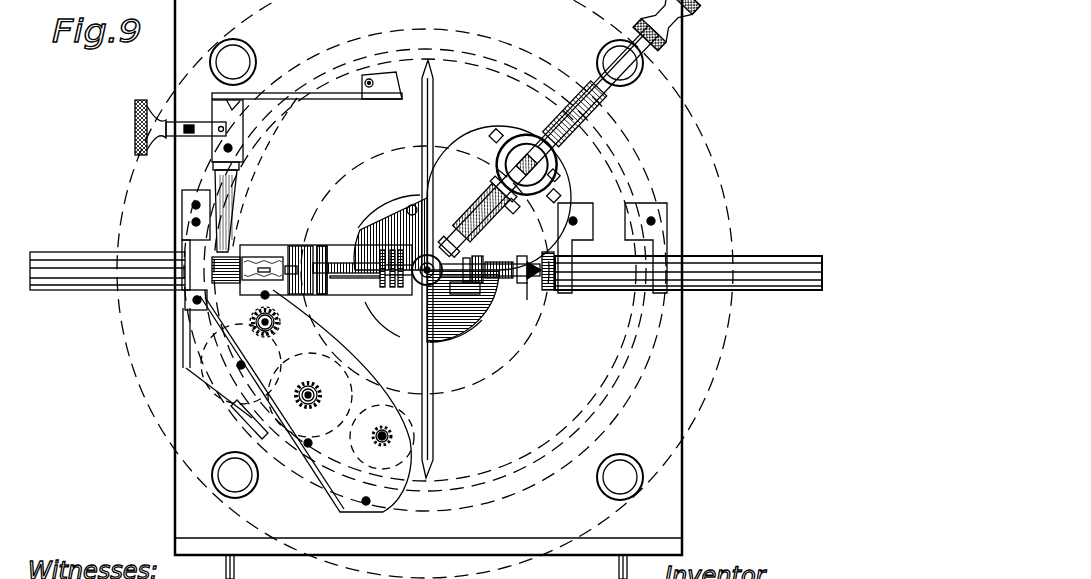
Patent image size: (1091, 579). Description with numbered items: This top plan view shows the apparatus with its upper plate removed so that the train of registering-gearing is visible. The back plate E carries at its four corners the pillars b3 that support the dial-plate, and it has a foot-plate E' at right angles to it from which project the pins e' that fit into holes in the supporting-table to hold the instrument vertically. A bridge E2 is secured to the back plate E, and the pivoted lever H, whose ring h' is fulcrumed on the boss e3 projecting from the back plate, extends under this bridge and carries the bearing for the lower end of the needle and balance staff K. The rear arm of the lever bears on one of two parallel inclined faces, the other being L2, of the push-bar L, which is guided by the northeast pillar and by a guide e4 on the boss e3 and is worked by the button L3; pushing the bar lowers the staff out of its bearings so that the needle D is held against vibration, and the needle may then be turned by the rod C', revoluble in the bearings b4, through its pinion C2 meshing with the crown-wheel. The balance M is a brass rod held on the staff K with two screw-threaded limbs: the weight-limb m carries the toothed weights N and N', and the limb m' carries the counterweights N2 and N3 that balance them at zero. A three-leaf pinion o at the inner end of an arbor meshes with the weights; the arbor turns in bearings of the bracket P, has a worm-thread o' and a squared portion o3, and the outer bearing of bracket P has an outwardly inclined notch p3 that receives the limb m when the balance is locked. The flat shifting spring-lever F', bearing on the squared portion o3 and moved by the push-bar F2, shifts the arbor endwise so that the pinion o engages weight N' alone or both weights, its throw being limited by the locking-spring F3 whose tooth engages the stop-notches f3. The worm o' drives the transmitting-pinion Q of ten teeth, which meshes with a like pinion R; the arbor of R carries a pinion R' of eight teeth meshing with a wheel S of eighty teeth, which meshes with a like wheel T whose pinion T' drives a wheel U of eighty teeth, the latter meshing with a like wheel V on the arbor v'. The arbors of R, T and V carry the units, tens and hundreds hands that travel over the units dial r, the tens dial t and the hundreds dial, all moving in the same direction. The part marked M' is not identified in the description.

The back plate E is at (425, 289).
The foot-plate E' is at (428, 532).
The bridge E2 is at (411, 206).
The pins e' is at (426, 567).
The boss e3 is at (556, 178).
The guide e4 is at (512, 200).
The pillars b3 is at (426, 269).
The bearings b4 is at (612, 248).
The rod C' is at (426, 262).
The pinion C2 is at (551, 296).
The magnetic needle D is at (436, 269).
The weight N is at (462, 244).
The second weight N' is at (375, 328).
The counter-weight N2 is at (508, 305).
The second counterweight N3 is at (527, 300).
The staff K is at (433, 278).
The limb m' is at (490, 260).
The spindle nut M' is at (474, 293).
The push-bar L is at (578, 94).
The inclined face L2 is at (588, 100).
The button L3 is at (674, 25).
The pivoted lever H is at (498, 170).
The ring h' is at (515, 166).
The balance M is at (326, 244).
The weight-limb m is at (355, 284).
The squared portion o3 is at (250, 256).
The worm-thread o' is at (268, 242).
The pinion o is at (293, 244).
The notch p3 is at (322, 248).
The bracket P is at (182, 218).
The push-bar F2 is at (164, 127).
The shifting spring-lever F' is at (234, 176).
The locking-spring F3 is at (307, 93).
The stop-notches f3 is at (240, 104).
The wheel U is at (310, 470).
The transmitting-pinion Q is at (258, 297).
The pinion R is at (290, 318).
The pinion R' is at (275, 327).
The units dial r is at (280, 324).
The wheel S is at (241, 364).
The wheel T is at (303, 385).
The tens dial t is at (310, 388).
The pinion T' is at (310, 395).
The wheel V is at (382, 438).
The arbor v' is at (382, 424).